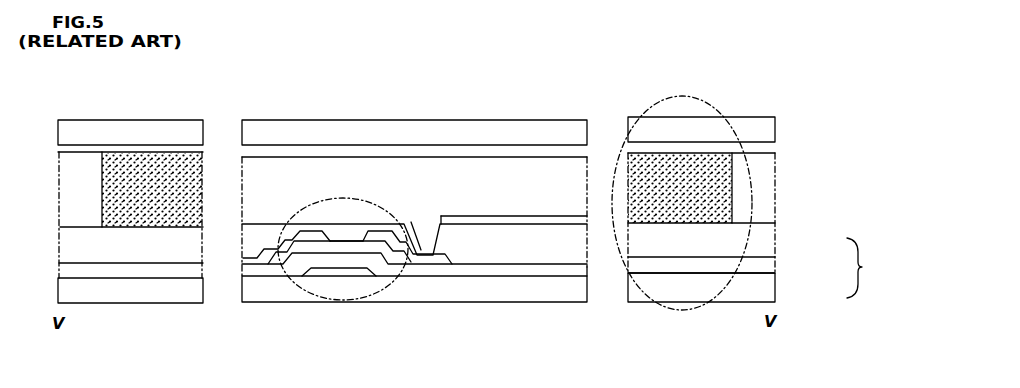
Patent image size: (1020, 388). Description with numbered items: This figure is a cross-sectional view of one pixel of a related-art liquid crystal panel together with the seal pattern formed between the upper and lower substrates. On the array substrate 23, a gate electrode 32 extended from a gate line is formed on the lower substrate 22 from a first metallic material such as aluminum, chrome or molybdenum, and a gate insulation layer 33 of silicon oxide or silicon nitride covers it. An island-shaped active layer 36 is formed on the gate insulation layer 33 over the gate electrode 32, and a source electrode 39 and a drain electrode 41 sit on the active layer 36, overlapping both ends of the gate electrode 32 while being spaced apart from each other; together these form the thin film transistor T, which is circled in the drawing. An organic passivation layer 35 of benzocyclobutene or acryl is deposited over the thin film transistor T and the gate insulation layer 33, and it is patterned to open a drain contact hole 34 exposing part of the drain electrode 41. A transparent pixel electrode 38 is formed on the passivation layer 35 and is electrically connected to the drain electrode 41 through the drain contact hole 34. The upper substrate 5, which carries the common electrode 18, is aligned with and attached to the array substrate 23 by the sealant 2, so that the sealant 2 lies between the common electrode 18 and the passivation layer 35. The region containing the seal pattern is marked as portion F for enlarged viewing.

The upper substrate 5 is at (768, 127).
The common electrode 18 is at (768, 150).
The sealant 2 is at (732, 188).
The passivation layer 35 is at (548, 250).
The gate insulation layer 33 is at (495, 275).
The lower substrate 22 is at (438, 292).
The array substrate 23 is at (870, 268).
The gate electrode 32 is at (322, 272).
The active layer 36 is at (343, 243).
The source electrode 39 is at (283, 247).
The drain electrode 41 is at (395, 237).
The pixel electrode 38 is at (472, 220).
The drain contact hole 34 is at (419, 224).
The thin film transistor T is at (368, 302).
The portion F is at (680, 310).